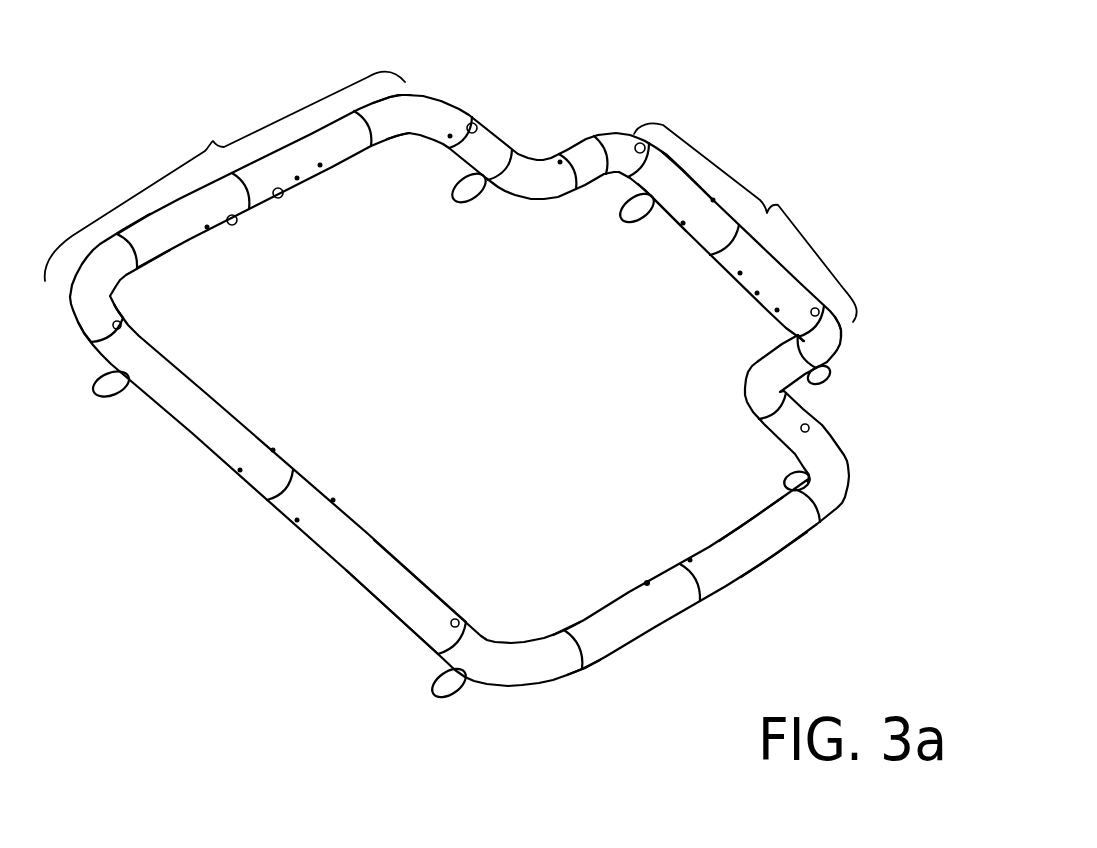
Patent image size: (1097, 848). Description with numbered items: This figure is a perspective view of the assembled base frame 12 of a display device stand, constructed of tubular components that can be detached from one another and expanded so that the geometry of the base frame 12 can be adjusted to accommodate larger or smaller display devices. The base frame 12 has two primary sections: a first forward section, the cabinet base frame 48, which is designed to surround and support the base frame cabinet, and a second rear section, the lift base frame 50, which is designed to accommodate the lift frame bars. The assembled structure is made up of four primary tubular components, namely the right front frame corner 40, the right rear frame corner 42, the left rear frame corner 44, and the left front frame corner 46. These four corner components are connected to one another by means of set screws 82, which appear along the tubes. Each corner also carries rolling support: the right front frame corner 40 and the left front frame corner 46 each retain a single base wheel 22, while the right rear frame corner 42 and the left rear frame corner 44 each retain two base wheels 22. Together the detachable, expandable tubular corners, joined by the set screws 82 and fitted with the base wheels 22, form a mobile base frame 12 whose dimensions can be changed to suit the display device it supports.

The base frame 12 is at (860, 491).
The base wheel 22 is at (621, 219).
The right front frame corner 40 is at (545, 672).
The right rear frame corner 42 is at (828, 503).
The left rear frame corner 44 is at (545, 178).
The left front frame corner 46 is at (101, 298).
The cabinet base frame 48 is at (228, 176).
The lift base frame 50 is at (745, 232).
The set screws 82 is at (287, 202).